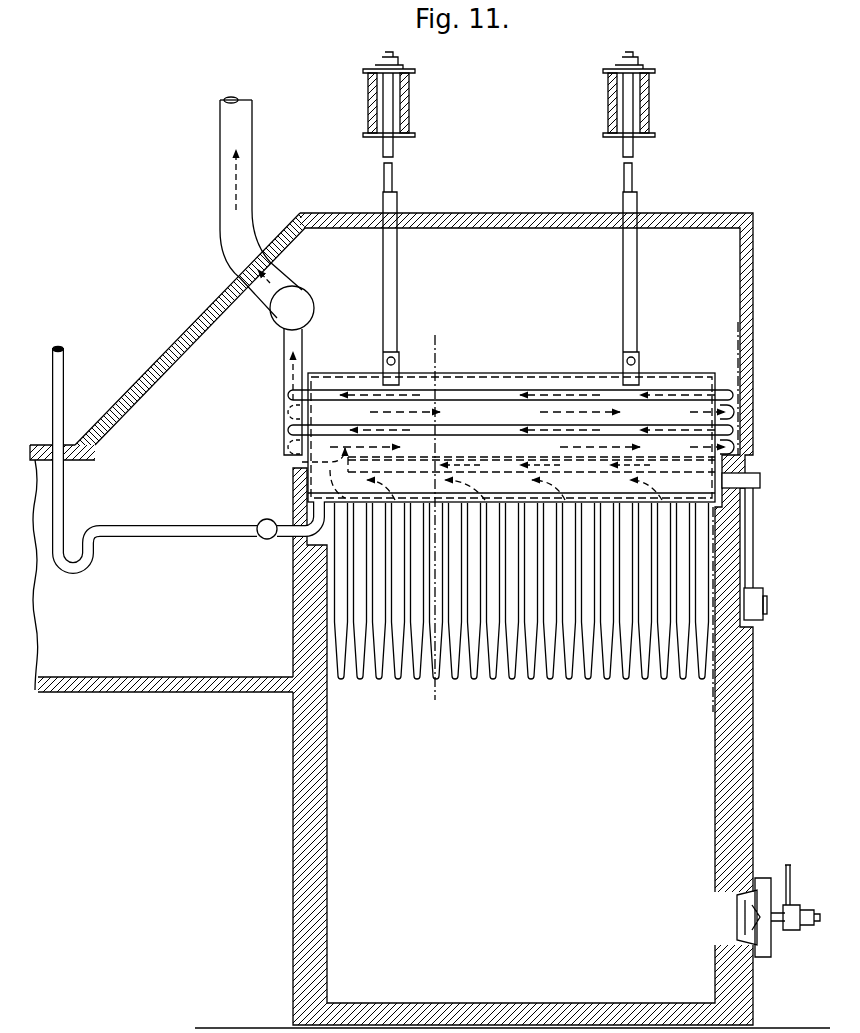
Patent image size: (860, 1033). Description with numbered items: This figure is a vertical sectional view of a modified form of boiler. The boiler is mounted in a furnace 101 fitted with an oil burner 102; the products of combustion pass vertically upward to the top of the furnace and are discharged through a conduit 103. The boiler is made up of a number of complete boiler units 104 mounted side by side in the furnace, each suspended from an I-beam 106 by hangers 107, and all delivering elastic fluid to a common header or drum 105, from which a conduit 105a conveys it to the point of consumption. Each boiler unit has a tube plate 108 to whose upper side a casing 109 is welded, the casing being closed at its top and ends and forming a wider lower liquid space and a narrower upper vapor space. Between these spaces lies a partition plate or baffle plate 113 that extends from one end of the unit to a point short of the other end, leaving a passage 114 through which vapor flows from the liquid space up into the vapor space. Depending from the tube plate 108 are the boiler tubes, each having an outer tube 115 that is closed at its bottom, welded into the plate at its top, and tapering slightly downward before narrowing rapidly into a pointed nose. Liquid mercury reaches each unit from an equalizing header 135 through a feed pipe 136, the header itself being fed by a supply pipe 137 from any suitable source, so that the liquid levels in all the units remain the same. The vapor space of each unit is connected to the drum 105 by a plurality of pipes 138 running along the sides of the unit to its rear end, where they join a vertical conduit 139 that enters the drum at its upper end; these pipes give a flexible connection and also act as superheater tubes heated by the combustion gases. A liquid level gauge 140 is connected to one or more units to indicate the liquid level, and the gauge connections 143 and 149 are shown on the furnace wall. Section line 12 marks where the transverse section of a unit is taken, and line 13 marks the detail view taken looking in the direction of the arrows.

The section line 12— 12 is at (460, 343).
The section line 13— 13 is at (762, 316).
The furnace 101 is at (754, 780).
The oil burner 102 is at (748, 928).
The conduit 103 is at (146, 433).
The boiler unit 104 is at (490, 372).
The header or drum 105 is at (271, 318).
The conduit 105a is at (222, 203).
The I-beam 106 is at (410, 108).
The hanger 107 is at (398, 205).
The tube plate 108 is at (308, 500).
The casing 109 is at (306, 475).
The partition plate or baffle plate 113 is at (537, 457).
The passage 114 is at (300, 459).
The outer tube 115 is at (602, 683).
The equalizing header 135 is at (258, 536).
The feed pipe 136 is at (278, 540).
The supply pipe 137 is at (170, 523).
The pipe 138 is at (676, 398).
The vertical conduit 139 is at (303, 352).
The liquid level gauge 140 is at (762, 482).
The pipe 143 is at (756, 555).
The fitting 149 is at (760, 620).